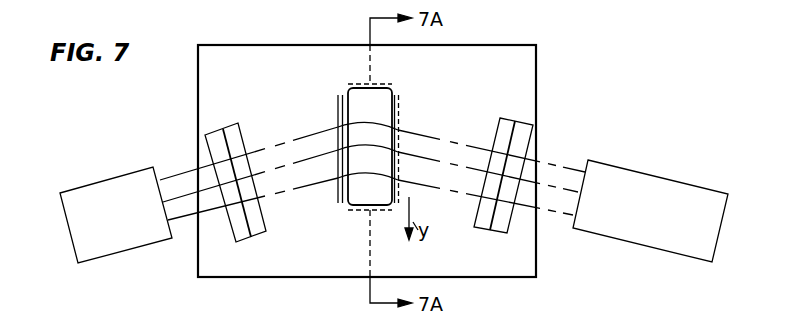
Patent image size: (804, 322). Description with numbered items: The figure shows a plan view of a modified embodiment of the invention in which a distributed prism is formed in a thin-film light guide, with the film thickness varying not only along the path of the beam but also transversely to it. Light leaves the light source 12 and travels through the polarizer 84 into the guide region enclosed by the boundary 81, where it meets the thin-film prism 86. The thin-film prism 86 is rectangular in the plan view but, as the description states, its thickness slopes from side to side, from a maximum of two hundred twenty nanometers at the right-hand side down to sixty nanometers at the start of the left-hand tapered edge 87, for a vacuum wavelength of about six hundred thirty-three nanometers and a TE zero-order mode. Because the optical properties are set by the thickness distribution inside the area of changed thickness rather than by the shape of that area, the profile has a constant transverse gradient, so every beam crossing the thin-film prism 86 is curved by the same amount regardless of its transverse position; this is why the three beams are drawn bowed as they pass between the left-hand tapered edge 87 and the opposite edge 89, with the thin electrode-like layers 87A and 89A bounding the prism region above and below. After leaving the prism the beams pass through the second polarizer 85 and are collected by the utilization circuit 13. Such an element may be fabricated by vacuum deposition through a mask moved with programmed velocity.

The light source 12 is at (128, 174).
The utilization circuit 13 is at (664, 174).
The light valve housing 81 is at (494, 267).
The input polarizer 84 is at (212, 137).
The output polarizer 85 is at (523, 130).
The thin-film prism 86 is at (382, 98).
The left-hand tapered edge 87 is at (337, 112).
The first electrode 87A is at (360, 82).
The second electrode plate 89 is at (402, 118).
The second electrode 89A is at (365, 213).